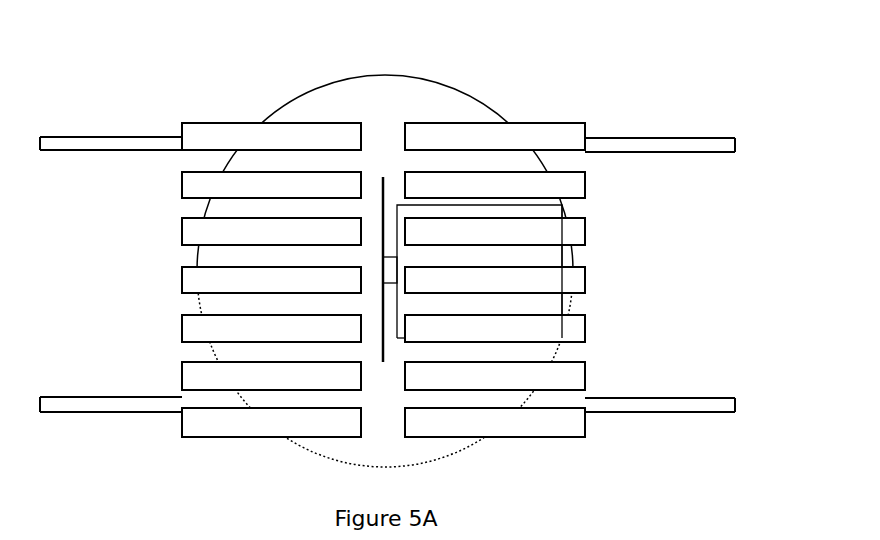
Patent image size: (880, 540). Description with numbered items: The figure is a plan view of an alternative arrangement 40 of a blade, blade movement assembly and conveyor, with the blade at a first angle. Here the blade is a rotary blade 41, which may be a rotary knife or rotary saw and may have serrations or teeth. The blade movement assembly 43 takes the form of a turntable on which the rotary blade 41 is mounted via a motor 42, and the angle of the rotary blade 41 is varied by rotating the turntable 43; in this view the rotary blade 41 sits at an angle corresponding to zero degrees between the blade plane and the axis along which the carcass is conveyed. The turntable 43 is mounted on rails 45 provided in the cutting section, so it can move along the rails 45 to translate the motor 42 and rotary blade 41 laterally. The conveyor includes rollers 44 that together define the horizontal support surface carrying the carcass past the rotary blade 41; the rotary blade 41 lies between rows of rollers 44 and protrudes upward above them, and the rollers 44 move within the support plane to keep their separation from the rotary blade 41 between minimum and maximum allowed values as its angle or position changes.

The capacitive sensor assembly 40 is at (549, 58).
The rotary blade 41 is at (382, 192).
The motor 42 is at (570, 208).
The blade movement assembly 43 is at (278, 105).
The rollers 44 is at (182, 330).
The rails 45 is at (710, 152).